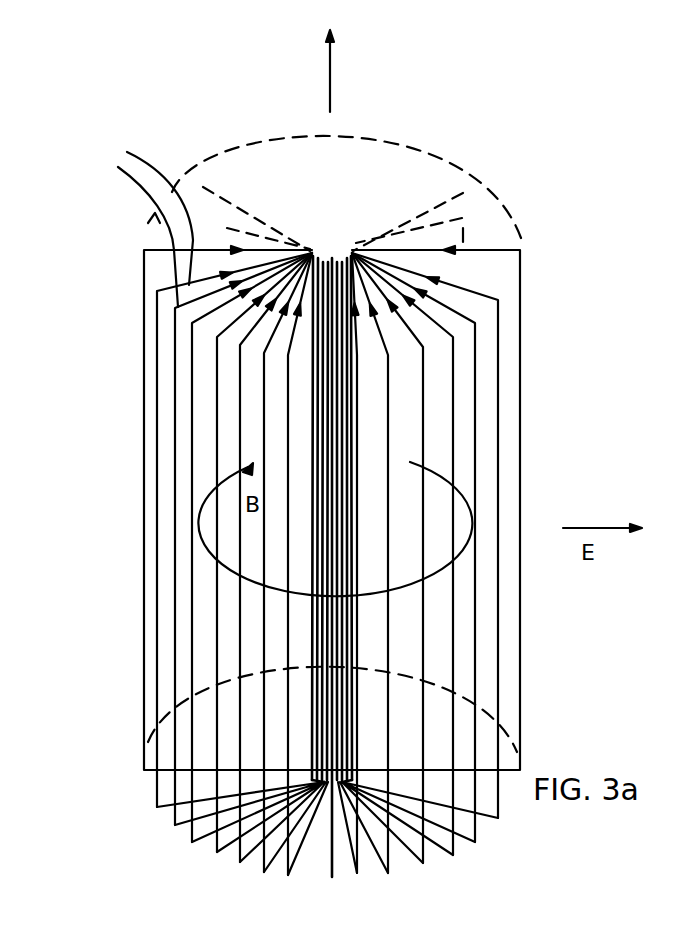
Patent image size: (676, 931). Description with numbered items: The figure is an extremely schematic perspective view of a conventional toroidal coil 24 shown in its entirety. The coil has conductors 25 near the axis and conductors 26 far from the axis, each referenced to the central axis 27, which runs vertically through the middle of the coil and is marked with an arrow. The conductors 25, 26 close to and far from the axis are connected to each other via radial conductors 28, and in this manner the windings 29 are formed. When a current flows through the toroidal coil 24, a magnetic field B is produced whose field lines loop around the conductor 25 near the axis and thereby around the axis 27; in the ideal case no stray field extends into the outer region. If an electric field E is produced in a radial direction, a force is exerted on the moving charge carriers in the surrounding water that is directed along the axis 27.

The toroidal coil 24 is at (514, 129).
The conductors near the axis 25 is at (313, 625).
The conductors far from the axis 26 is at (475, 410).
The central axis 27 is at (330, 82).
The radial conductors 28 is at (146, 225).
The windings 29 is at (528, 257).